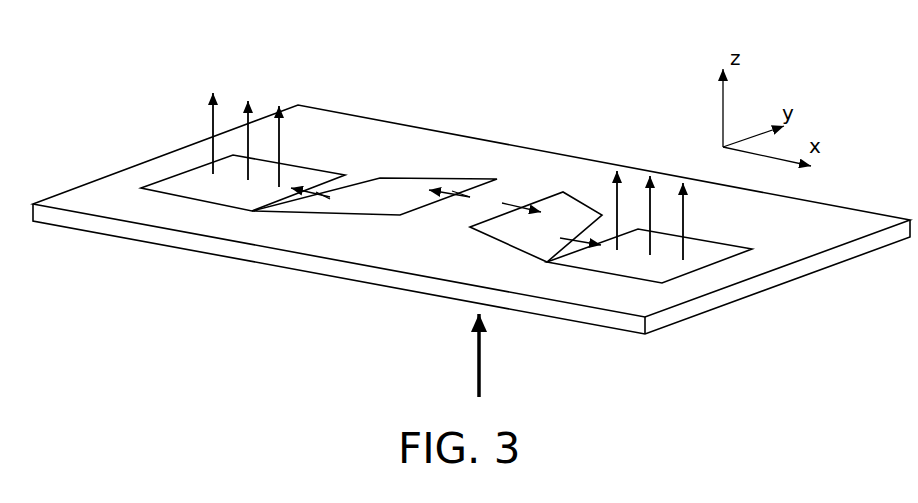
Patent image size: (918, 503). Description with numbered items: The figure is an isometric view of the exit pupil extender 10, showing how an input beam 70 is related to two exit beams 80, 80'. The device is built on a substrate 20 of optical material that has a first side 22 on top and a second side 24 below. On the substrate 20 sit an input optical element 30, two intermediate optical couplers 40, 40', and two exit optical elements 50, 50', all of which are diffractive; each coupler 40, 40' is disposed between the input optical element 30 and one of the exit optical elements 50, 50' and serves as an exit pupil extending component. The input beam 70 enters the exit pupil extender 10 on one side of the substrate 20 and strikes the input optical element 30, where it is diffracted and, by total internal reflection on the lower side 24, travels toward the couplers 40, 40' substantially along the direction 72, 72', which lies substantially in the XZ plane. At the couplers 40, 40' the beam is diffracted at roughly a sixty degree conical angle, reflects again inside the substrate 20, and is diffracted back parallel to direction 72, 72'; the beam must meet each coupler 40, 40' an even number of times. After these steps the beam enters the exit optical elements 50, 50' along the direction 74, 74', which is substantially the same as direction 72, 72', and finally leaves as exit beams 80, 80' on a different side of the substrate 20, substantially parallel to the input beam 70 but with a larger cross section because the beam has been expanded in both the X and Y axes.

The exit pupil extender 10 is at (489, 80).
The substrate 20 is at (151, 146).
The first side 22 is at (112, 180).
The second side 24 is at (110, 235).
The input optical element 30 is at (468, 210).
The intermediate optical coupler 40 is at (374, 131).
The intermediate optical coupler 40' is at (536, 286).
The exit optical element 50 is at (276, 128).
The exit optical element 50' is at (658, 292).
The input beam 70 is at (461, 355).
The direction 72 is at (402, 254).
The direction 72' is at (534, 133).
The direction 74 is at (307, 247).
The direction 74' is at (600, 149).
The exit beam 80 is at (246, 124).
The exit beam 80' is at (650, 199).